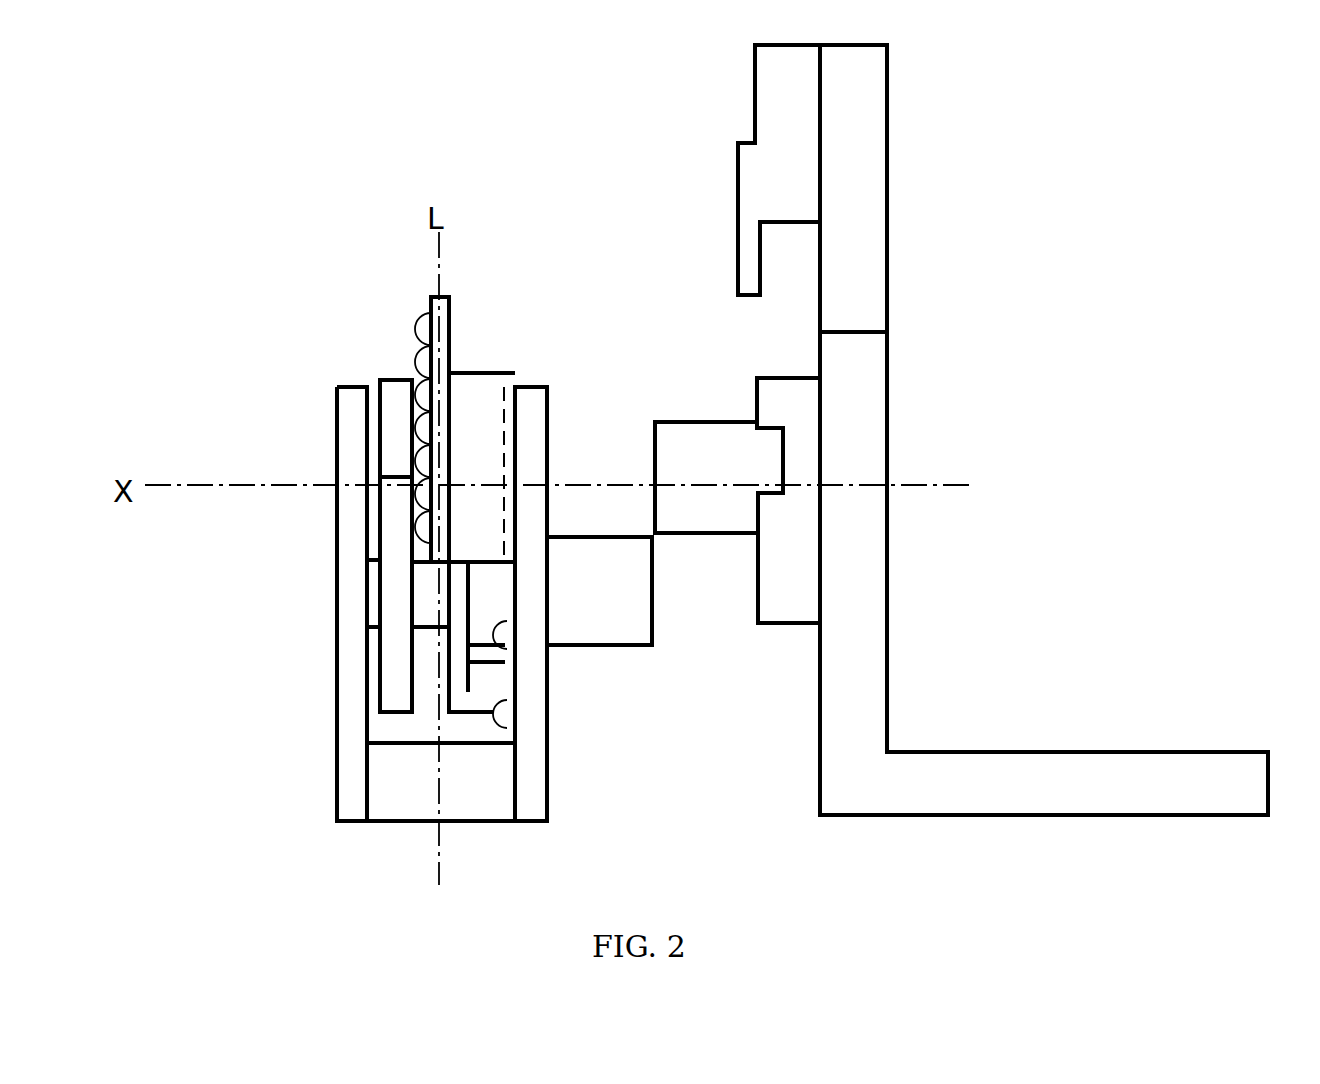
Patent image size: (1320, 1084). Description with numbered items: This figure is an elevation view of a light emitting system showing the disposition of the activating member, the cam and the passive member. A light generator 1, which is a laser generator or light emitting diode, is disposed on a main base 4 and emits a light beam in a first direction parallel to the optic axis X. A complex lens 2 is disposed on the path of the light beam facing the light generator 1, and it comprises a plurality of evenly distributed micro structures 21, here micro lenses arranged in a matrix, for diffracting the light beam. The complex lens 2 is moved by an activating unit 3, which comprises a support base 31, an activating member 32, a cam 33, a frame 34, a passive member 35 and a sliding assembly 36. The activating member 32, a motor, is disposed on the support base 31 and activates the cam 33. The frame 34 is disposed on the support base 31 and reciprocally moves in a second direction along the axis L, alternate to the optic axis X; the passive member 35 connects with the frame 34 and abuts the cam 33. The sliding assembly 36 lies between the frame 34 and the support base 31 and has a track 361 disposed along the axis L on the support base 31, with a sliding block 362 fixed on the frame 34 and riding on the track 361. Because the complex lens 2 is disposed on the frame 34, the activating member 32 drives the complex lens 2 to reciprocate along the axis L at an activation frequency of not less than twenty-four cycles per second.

The light generator 1 is at (687, 437).
The complex lens 2 is at (412, 268).
The micro structures 21 is at (414, 352).
The activating unit 3 is at (362, 519).
The support base 31 is at (350, 782).
The activating member 32 is at (642, 616).
The cam 33 is at (390, 592).
The frame 34 is at (446, 297).
The passive member 35 is at (388, 434).
The sliding assembly 36 is at (522, 360).
The track 361 is at (510, 718).
The sliding block 362 is at (484, 387).
The main base 4 is at (880, 558).